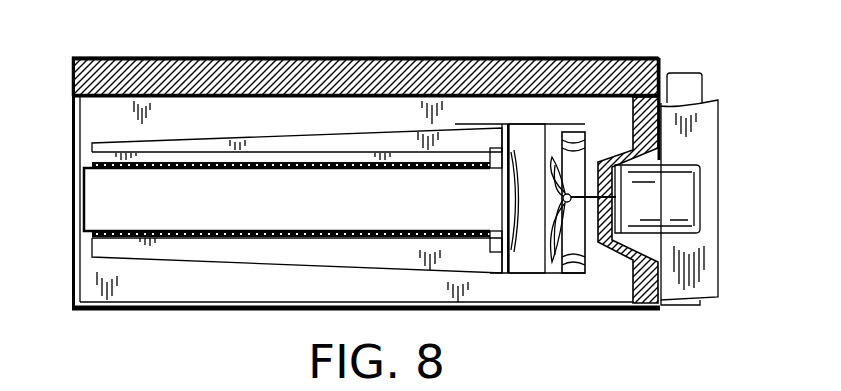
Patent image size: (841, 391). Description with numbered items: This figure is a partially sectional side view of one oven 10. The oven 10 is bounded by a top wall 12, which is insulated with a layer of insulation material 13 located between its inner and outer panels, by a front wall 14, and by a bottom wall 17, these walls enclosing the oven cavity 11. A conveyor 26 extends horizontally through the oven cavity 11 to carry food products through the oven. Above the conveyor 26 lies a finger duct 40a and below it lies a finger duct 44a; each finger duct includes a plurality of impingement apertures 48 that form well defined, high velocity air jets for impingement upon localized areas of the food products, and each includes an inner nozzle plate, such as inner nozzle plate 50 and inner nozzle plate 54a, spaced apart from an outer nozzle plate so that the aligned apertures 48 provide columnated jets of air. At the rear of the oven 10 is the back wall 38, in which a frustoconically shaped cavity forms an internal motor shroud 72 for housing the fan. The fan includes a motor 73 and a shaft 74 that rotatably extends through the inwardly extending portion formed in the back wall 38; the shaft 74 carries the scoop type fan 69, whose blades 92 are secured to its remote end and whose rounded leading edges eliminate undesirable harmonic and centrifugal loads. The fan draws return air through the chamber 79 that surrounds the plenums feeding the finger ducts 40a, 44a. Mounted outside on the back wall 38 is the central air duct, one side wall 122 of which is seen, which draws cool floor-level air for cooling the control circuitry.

The oven 10 is at (102, 46).
The oven cavity 11 is at (118, 125).
The top wall 12 is at (351, 58).
The insulation material 13 is at (250, 58).
The front wall 14 is at (71, 184).
The bottom wall 17 is at (166, 303).
The conveyor 26 is at (255, 205).
The back wall 38 is at (702, 101).
The finger duct 40a is at (342, 144).
The finger duct 44a is at (373, 254).
The impingement apertures 48 is at (164, 168).
The inner nozzle plate 50 is at (177, 157).
The inner nozzle plate 54a is at (180, 239).
The scoop type fan 69 is at (706, 195).
The motor shroud 72 is at (661, 157).
The motor 73 is at (682, 182).
The shaft 74 is at (589, 196).
The chamber 79 is at (625, 121).
The fan blades 92 is at (553, 258).
The side wall of central duct 122 is at (702, 278).